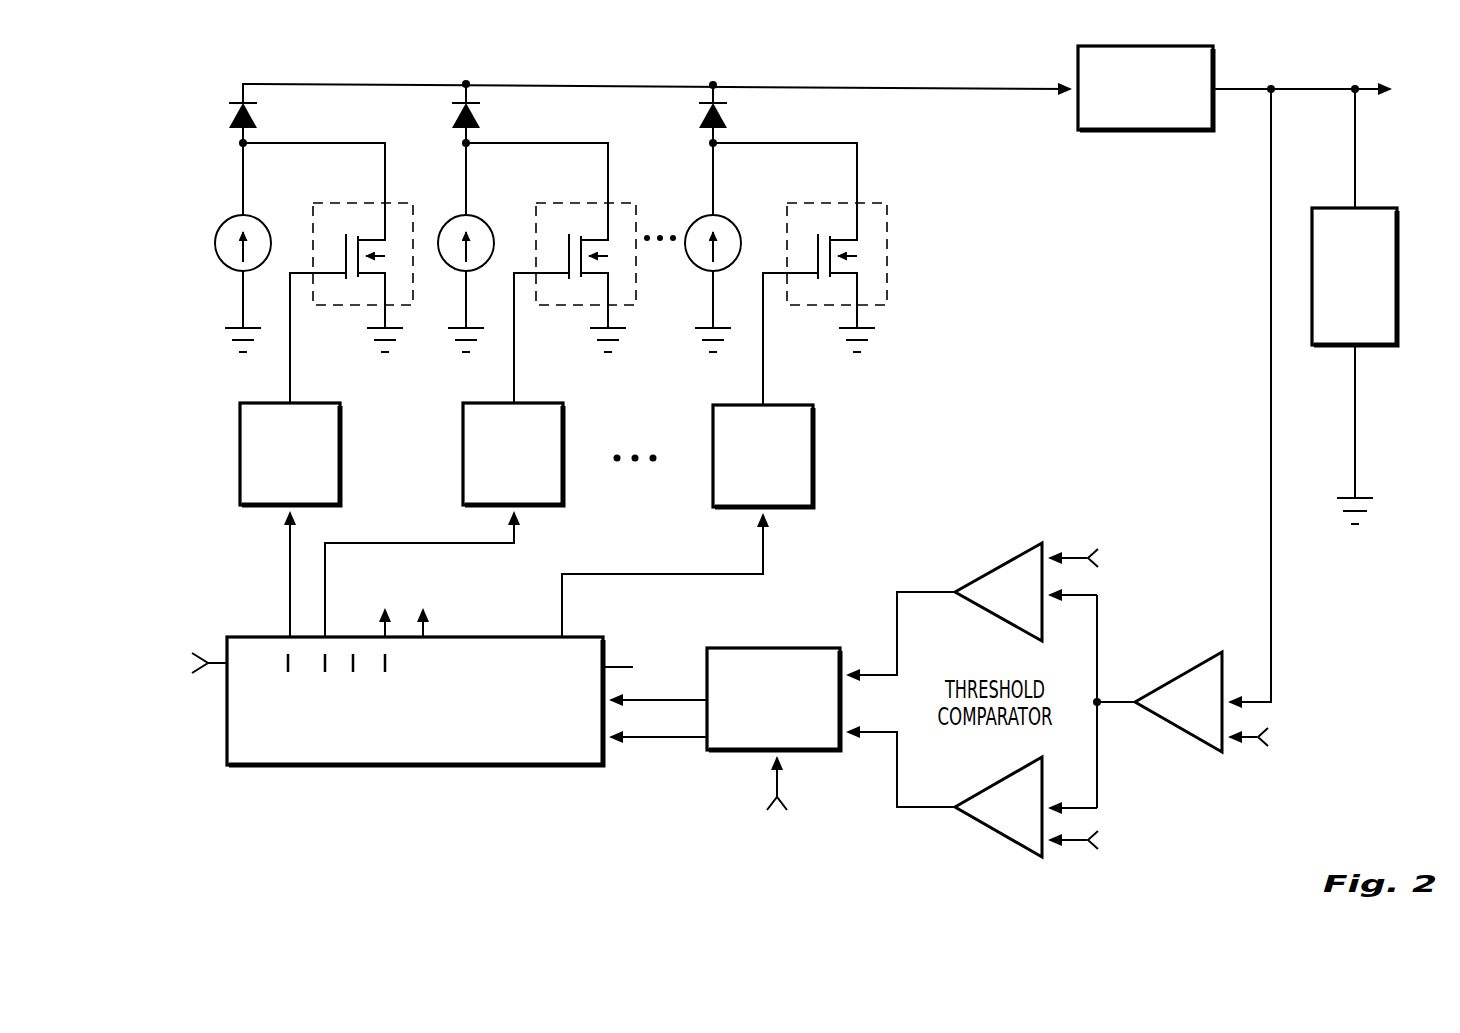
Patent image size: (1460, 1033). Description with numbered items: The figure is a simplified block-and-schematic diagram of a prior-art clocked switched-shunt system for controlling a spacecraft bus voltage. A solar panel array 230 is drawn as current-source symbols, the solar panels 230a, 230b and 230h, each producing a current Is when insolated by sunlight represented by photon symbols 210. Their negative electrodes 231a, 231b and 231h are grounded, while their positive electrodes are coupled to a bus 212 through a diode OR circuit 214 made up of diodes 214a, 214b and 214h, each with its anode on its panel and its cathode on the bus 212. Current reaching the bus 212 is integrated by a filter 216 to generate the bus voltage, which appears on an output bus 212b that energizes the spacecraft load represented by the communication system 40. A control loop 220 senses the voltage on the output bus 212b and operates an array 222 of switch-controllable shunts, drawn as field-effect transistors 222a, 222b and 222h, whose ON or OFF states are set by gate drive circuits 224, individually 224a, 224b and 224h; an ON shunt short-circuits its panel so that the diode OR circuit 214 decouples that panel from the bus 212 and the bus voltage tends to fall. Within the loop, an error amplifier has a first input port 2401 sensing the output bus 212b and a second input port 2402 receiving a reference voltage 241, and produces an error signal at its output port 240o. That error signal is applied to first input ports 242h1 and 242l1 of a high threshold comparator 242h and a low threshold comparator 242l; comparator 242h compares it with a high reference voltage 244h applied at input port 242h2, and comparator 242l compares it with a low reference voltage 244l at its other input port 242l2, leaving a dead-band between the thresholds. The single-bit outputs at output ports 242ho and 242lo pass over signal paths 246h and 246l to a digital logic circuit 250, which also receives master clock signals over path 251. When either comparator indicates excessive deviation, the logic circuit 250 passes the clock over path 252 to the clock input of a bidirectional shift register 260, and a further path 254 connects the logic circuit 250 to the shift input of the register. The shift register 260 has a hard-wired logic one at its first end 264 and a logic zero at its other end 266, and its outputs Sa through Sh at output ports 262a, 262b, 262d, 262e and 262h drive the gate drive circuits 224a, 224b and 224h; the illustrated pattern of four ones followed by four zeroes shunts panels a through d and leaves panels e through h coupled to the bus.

The bus 212 is at (978, 88).
The output bus 212b is at (1305, 91).
The integrating filter 216 is at (1148, 131).
The communication system 40 is at (1397, 283).
The diode OR circuit 214 is at (640, 115).
The diode 214a is at (258, 118).
The diode 214b is at (480, 118).
The diode 214h is at (727, 118).
The photon symbols 210 is at (150, 150).
The solar panel array 230 is at (573, 378).
The solar panel 230a is at (226, 268).
The solar panel 230b is at (500, 210).
The solar panel 230h is at (697, 266).
The negative electrode 231a is at (243, 309).
The negative electrode 231b is at (466, 316).
The negative electrode 231h is at (713, 316).
The array of switch-controllable shunts 222 is at (338, 181).
The shunt 222a is at (332, 306).
The shunt 222b is at (575, 203).
The shunt 222h is at (887, 203).
The gate drive circuit 224 is at (897, 419).
The gate drive circuit 224a is at (240, 453).
The gate drive circuit 224b is at (463, 453).
The gate drive circuit 224h is at (813, 457).
The control loop 220 is at (980, 397).
The bidirectional shift register 260 is at (432, 766).
The output port 262a is at (288, 636).
The output port 262b is at (328, 636).
The output port 262d is at (393, 628).
The output port 262e is at (425, 633).
The output port 262h is at (563, 637).
The first end of shift register 264 is at (223, 668).
The other end of shift register 266 is at (607, 665).
The digital logic circuit 250 is at (790, 648).
The master clock path 251 is at (780, 753).
The clock path 252 is at (668, 738).
The shift line 254 is at (645, 700).
The high threshold comparator 242h is at (986, 576).
The output port of high comparator 242ho is at (957, 595).
The first input port of high comparator 242h1 is at (1045, 590).
The second input port of high comparator 242h2 is at (1043, 547).
The high reference voltage 244h is at (1108, 560).
The signal path 246h is at (897, 600).
The low threshold comparator 242l is at (1000, 838).
The output port of low comparator 242lo is at (957, 810).
The first input port of low comparator 242l1 is at (1048, 818).
The low comparator input 242l2 is at (1043, 857).
The low reference voltage 244l is at (1098, 849).
The signal path 246l is at (897, 808).
The output port of error amplifier 240o is at (1137, 702).
The first input port of error amplifier 2401 is at (1228, 692).
The second input port of error amplifier 2402 is at (1226, 750).
The reference voltage 241 is at (1267, 733).